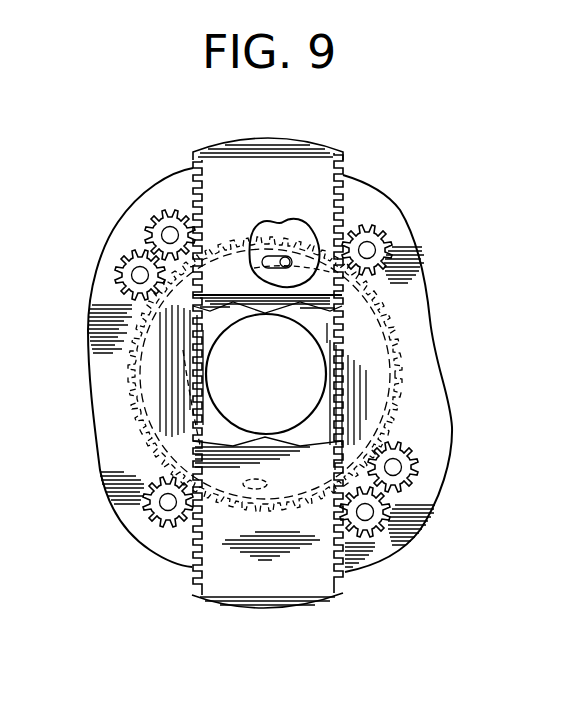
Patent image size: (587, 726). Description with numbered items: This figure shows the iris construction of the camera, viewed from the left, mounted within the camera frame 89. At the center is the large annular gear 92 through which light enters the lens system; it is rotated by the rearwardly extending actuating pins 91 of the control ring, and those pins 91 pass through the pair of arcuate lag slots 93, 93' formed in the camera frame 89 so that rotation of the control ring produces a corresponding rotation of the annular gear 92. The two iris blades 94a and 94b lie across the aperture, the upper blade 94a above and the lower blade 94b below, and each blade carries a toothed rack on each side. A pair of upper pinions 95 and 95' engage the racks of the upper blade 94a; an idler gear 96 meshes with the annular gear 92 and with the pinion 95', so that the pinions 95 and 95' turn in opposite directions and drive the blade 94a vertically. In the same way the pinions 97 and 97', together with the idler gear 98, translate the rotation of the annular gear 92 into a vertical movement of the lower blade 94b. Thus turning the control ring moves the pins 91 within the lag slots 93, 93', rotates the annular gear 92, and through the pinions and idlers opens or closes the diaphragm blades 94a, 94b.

The camera frame 89 is at (440, 432).
The actuating pin 91 is at (262, 265).
The annular gear 92 is at (372, 406).
The arcuate lag slot 93 is at (247, 382).
The arcuate lag slot 93' is at (352, 384).
The upper iris blade 94a is at (246, 165).
The lower iris blade 94b is at (260, 585).
The upper pinion 95 is at (395, 250).
The upper pinion 95' is at (140, 222).
The idler gear 96 is at (122, 274).
The pinion 97 is at (140, 505).
The pinion 97' is at (396, 522).
The idler gear 98 is at (412, 470).